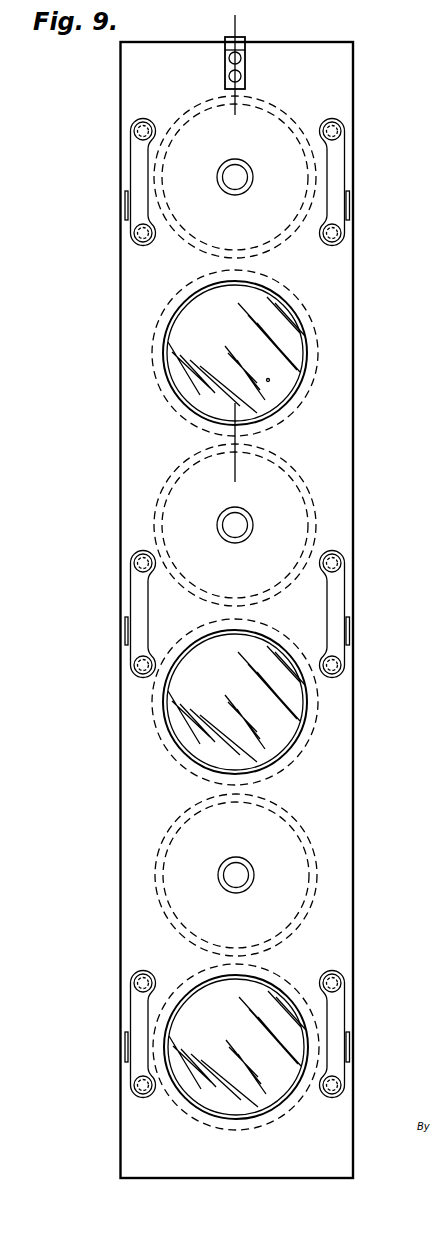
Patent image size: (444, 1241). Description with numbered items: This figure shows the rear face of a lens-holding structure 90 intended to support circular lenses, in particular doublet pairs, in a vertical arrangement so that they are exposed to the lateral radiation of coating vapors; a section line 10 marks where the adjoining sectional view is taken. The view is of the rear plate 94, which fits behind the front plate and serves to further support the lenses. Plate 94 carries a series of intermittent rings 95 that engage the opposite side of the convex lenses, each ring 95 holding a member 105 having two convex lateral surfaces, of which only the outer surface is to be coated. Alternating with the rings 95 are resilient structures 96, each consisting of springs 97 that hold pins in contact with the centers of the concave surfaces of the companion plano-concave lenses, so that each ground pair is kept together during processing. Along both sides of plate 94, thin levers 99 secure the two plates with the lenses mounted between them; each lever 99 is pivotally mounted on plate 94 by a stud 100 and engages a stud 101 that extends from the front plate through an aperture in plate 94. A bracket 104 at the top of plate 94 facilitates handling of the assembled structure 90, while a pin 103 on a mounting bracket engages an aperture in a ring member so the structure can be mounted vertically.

The section line 10 is at (250, 24).
The structure 90 is at (367, 52).
The plate 94 is at (333, 442).
The rings 95 is at (183, 306).
The resilient structures 96 is at (257, 165).
The springs 97 is at (292, 232).
The levers 99 is at (343, 163).
The studs 100 is at (344, 131).
The studs 101 is at (344, 240).
The pin 103 is at (434, 196).
The bracket 104 is at (247, 66).
The member 105 is at (271, 382).